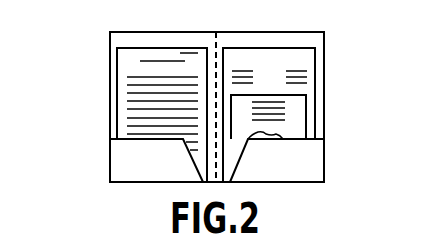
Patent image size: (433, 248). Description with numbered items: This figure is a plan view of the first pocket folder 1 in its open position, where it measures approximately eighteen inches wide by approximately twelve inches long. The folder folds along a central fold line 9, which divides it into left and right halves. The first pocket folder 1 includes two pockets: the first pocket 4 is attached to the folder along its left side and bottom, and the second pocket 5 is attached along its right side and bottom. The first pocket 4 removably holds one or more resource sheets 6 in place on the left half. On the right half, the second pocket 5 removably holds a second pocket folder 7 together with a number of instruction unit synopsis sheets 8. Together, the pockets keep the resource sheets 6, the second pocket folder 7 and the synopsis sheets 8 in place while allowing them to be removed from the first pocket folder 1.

The first pocket folder 1 is at (103, 51).
The first pocket 4 is at (117, 153).
The second pocket 5 is at (313, 165).
The resource sheets 6 is at (117, 72).
The second pocket folder 7 is at (316, 113).
The instruction unit synopsis sheets 8 is at (315, 66).
The fold line 9 is at (220, 44).